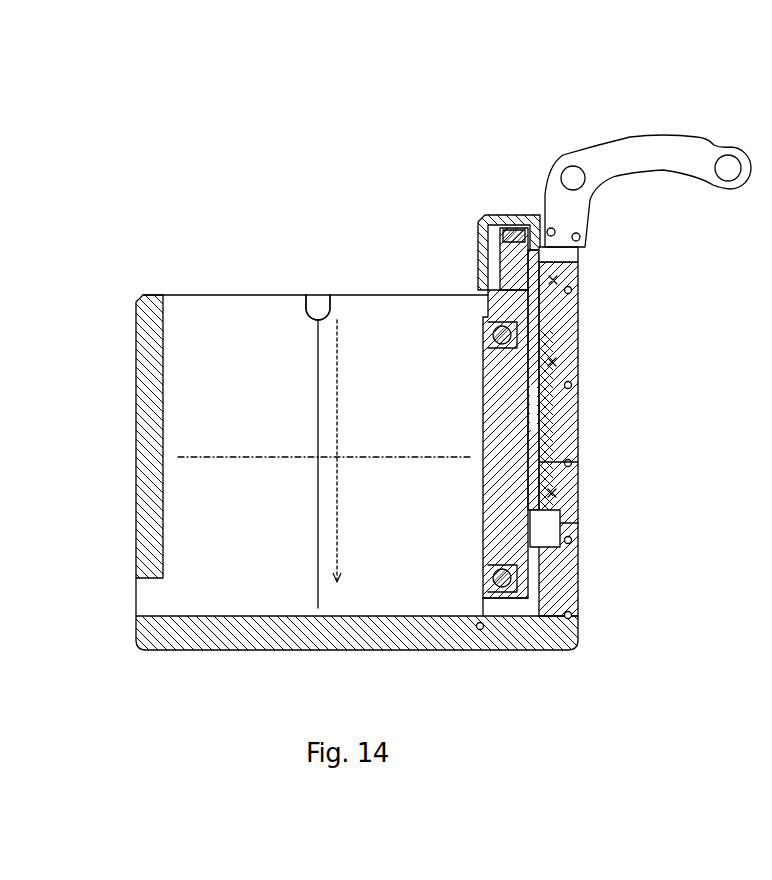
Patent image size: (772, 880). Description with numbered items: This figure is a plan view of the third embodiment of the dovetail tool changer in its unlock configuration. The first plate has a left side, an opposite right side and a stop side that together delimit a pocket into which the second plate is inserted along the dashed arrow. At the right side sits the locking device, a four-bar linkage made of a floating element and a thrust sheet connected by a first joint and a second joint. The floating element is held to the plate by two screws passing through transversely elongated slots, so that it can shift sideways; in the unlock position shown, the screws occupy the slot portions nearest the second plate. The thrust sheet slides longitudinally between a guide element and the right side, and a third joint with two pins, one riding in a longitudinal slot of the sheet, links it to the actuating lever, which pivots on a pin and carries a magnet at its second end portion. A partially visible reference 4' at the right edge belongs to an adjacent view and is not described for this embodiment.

The adjacent container wall 4' is at (760, 360).